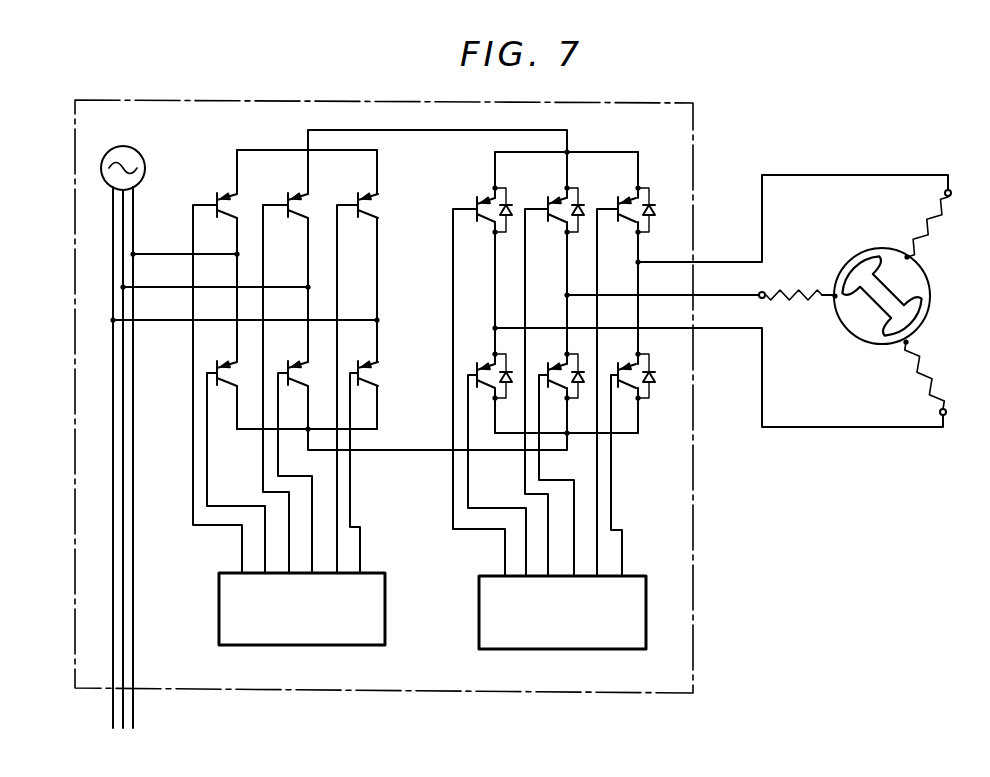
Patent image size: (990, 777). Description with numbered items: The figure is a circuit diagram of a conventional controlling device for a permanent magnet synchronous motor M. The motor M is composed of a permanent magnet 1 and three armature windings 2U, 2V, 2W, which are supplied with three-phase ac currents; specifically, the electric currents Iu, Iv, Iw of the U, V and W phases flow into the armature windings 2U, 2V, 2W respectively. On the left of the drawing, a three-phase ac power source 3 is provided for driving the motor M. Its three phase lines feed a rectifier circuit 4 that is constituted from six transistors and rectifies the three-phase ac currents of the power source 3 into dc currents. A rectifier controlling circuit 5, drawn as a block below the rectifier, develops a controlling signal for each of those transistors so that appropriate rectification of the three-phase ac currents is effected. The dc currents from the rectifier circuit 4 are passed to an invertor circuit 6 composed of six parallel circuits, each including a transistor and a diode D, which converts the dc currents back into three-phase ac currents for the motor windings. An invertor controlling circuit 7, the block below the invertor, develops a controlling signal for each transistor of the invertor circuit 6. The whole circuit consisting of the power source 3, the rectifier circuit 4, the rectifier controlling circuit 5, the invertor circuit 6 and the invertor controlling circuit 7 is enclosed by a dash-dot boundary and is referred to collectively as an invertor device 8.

The permanent magnet 1 is at (890, 292).
The armature winding 2U is at (916, 226).
The armature winding 2V is at (917, 380).
The armature winding 2W is at (795, 291).
The three-phase ac power source 3 is at (113, 150).
The rectifier circuit 4 is at (367, 346).
The rectifier controlling circuit 5 is at (219, 614).
The invertor circuit 6 is at (568, 345).
The invertor controlling circuit 7 is at (646, 616).
The invertor device 8 is at (693, 127).
The diode D is at (582, 208).
The permanent magnet synchronous motor M is at (876, 250).
The electric current of the U phase Iu is at (794, 207).
The electric current of the V phase Iv is at (720, 394).
The electric current of the W phase Iw is at (666, 284).